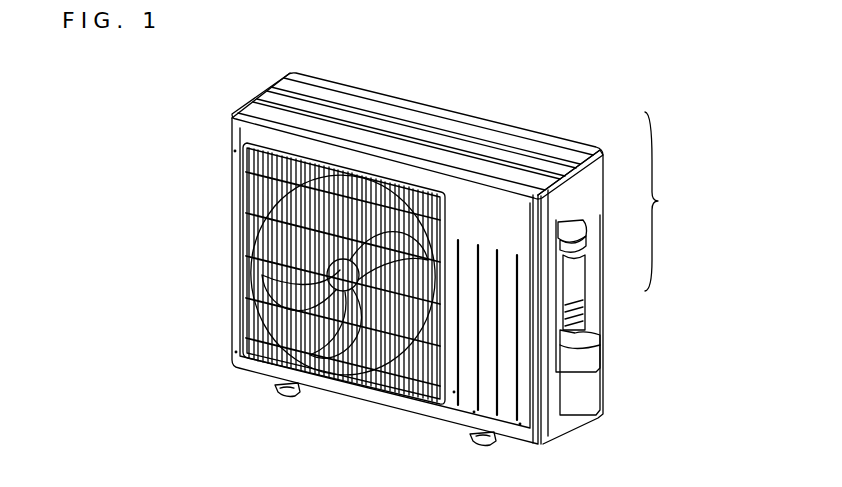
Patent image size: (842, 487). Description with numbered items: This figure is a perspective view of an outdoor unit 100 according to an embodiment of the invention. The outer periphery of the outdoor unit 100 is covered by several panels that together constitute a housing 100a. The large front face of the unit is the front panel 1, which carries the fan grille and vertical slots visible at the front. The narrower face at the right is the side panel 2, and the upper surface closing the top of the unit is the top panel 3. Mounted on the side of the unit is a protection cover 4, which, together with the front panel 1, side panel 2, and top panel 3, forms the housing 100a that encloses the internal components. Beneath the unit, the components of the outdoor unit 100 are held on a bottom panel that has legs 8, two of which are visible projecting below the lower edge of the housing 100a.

The outdoor unit 100 is at (437, 261).
The housing 100a is at (681, 201).
The front panel 1 is at (525, 211).
The side panel 2 is at (588, 242).
The top panel 3 is at (557, 145).
The protection cover 4 is at (580, 290).
The legs 8 is at (293, 395).